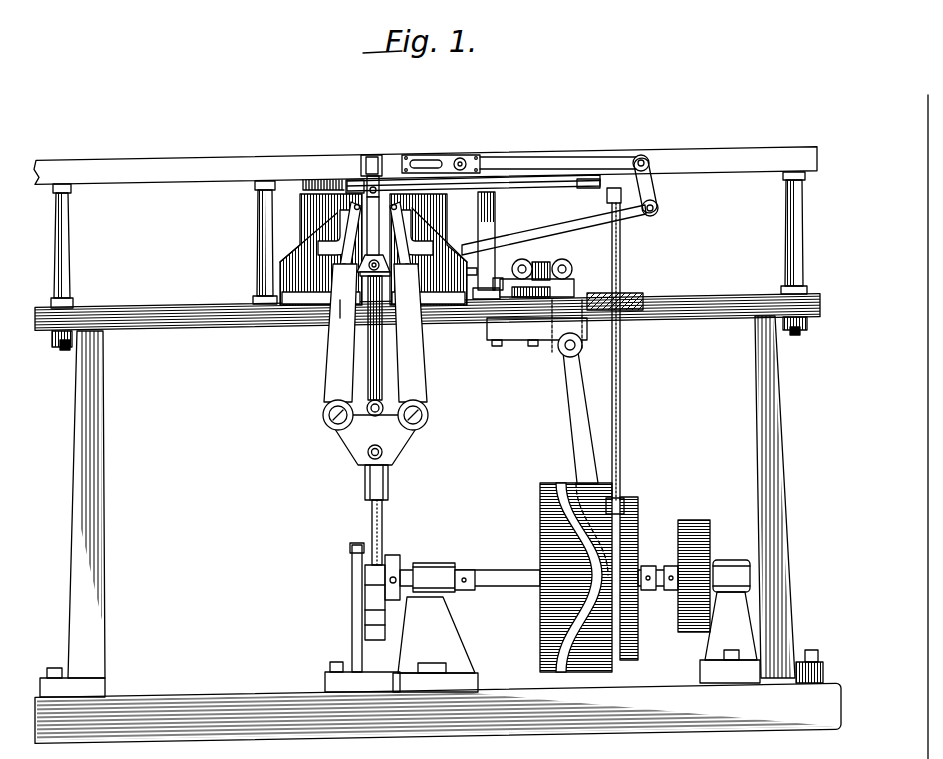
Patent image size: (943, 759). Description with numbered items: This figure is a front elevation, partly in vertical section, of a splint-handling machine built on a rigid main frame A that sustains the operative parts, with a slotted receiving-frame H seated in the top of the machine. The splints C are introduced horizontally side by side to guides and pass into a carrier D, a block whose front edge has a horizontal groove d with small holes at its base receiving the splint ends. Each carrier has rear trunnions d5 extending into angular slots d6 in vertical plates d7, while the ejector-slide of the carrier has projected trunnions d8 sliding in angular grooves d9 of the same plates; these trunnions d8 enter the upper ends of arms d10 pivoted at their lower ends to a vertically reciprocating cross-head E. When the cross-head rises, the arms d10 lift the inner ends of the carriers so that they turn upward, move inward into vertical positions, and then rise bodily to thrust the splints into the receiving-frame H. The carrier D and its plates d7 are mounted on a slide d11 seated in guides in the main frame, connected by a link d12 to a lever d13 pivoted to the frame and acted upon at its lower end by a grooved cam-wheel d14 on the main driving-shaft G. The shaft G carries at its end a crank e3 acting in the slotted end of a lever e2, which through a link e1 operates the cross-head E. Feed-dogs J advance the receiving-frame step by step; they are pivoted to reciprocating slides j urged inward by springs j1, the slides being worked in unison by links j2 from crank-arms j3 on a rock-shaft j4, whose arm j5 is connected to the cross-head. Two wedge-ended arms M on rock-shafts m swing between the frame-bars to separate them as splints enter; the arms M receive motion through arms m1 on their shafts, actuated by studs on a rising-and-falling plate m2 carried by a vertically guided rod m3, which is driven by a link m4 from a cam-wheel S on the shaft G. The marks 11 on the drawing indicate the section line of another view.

The main frame A is at (192, 308).
The splints C is at (304, 184).
The arms M is at (350, 180).
The receiving-frame H is at (366, 158).
The feed-dogs J is at (410, 161).
The reciprocating slides j is at (449, 166).
The links j2 is at (598, 168).
The crank-arms j3 is at (652, 178).
The rock-shaft j4 is at (660, 209).
The arm j5 is at (637, 216).
The rock-shafts m is at (522, 188).
The arms m1 is at (605, 190).
The rising-and-falling plate m2 is at (602, 184).
The vertically-guided rod m3 is at (622, 273).
The link m4 is at (622, 431).
The trunnions d5 is at (312, 221).
The angular slots d6 is at (340, 220).
The vertical plates d7 is at (379, 282).
The trunnions d8 is at (356, 237).
The angular grooves d9 is at (400, 237).
The carrier D is at (373, 259).
The horizontal groove d is at (372, 296).
The arms d10 is at (375, 333).
The springs j1 is at (340, 318).
The cross-head E is at (375, 450).
The link e1 is at (383, 528).
The lever e2 is at (366, 600).
The crank e3 is at (398, 587).
The main driving-shaft G is at (503, 571).
The grooved cam-wheel d14 is at (549, 488).
The cam-wheel S is at (639, 511).
The lever d13 is at (581, 417).
The housing 11 is at (549, 160).
The link d12 is at (560, 266).
The slide d11 is at (490, 283).